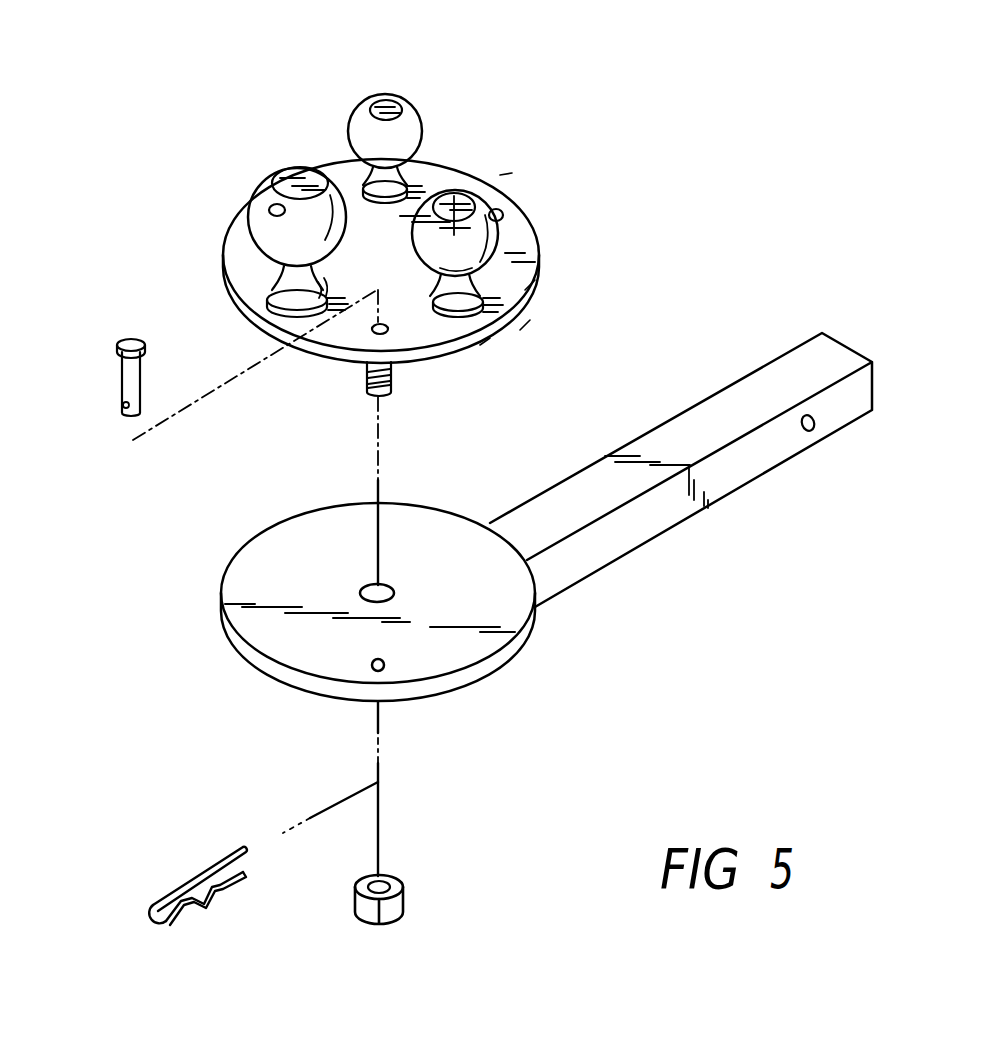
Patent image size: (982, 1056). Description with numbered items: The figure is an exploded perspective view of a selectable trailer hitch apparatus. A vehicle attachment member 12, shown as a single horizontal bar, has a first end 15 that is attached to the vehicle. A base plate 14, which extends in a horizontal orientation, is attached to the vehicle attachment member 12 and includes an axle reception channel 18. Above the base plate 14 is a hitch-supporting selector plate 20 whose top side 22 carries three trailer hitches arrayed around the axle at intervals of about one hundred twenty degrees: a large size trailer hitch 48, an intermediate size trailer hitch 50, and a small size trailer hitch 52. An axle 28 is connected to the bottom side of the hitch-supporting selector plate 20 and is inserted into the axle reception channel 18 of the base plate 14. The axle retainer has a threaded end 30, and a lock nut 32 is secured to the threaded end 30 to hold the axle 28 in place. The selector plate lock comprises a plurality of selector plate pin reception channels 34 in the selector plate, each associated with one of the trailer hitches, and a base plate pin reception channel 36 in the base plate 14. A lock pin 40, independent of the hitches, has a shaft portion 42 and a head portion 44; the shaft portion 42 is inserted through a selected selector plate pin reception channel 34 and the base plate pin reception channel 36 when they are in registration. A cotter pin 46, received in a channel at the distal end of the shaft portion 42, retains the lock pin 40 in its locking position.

The vehicle attachment member 12 is at (630, 533).
The base plate 14 is at (480, 668).
The first end 15 is at (767, 453).
The axle reception channel 18 is at (370, 590).
The hitch-supporting selector plate 20 is at (503, 322).
The top side 22 is at (599, 242).
The axle 28 is at (393, 370).
The threaded end 30 is at (367, 378).
The lock nut 32 is at (399, 907).
The selector plate pin reception channel 34 is at (267, 204).
The base plate pin reception channel 36 is at (372, 665).
The lock pin 40 is at (110, 352).
The shaft portion 42 is at (119, 376).
The head portion 44 is at (122, 343).
The cotter pin 46 is at (171, 886).
The large size trailer hitch 48 is at (322, 172).
The intermediate size trailer hitch 50 is at (457, 203).
The small size trailer hitch 52 is at (428, 127).